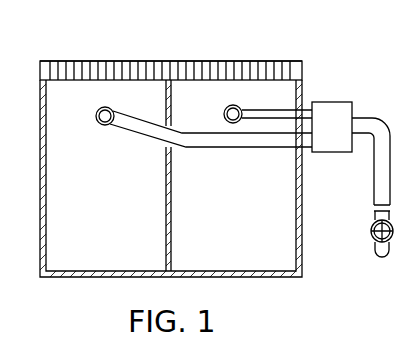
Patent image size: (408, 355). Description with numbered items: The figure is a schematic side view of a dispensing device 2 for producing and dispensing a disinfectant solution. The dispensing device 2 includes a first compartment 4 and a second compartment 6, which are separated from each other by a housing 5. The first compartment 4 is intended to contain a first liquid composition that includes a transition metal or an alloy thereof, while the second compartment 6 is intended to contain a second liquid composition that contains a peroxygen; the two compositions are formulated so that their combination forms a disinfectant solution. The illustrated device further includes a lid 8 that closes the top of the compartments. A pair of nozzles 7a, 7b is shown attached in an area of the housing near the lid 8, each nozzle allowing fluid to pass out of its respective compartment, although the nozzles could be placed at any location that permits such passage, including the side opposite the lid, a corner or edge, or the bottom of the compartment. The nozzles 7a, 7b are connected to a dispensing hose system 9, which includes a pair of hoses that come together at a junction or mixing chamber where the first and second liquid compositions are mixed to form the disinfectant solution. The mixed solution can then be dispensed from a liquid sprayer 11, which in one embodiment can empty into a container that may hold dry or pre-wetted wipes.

The dispensing device 2 is at (57, 42).
The first compartment 4 is at (114, 222).
The housing 5 is at (166, 243).
The second compartment 6 is at (244, 222).
The nozzle 7a is at (100, 107).
The nozzle 7b is at (225, 106).
The lid 8 is at (232, 72).
The dispensing hose system 9 is at (341, 139).
The liquid sprayer 11 is at (374, 248).